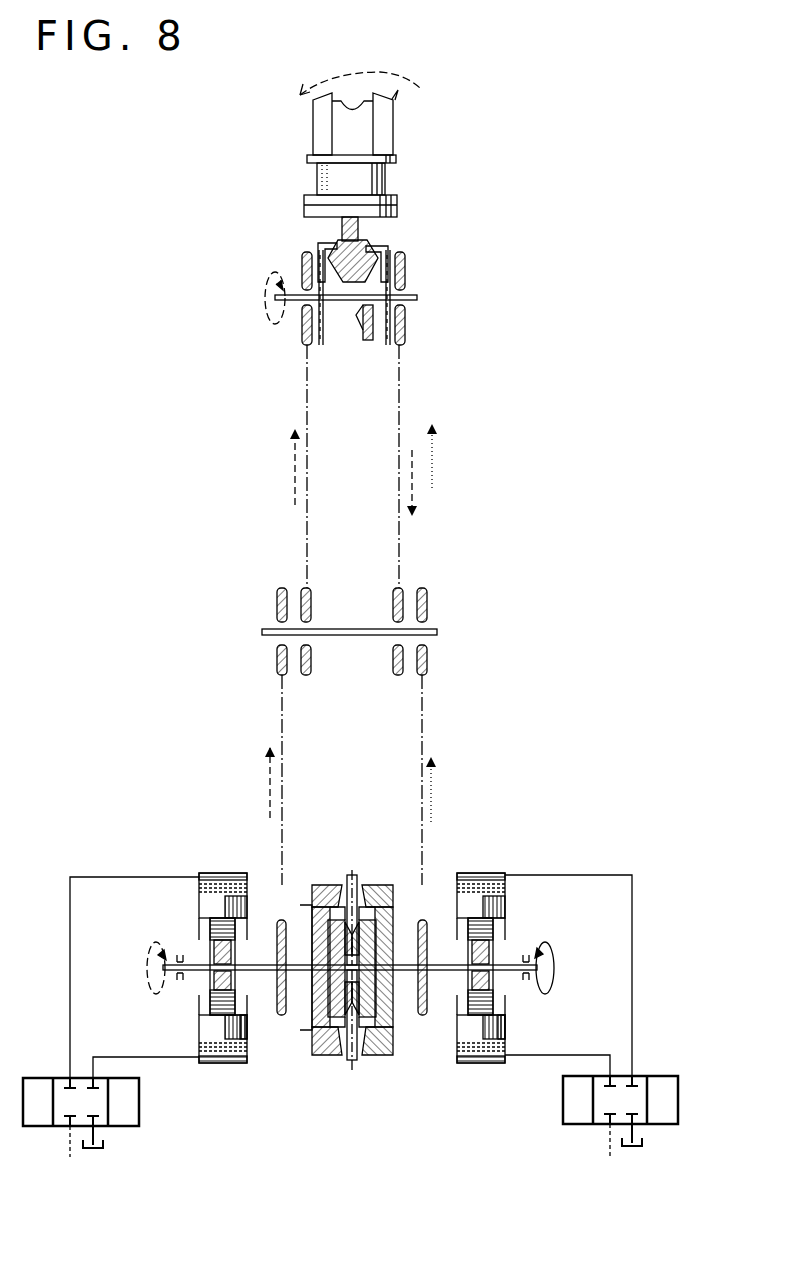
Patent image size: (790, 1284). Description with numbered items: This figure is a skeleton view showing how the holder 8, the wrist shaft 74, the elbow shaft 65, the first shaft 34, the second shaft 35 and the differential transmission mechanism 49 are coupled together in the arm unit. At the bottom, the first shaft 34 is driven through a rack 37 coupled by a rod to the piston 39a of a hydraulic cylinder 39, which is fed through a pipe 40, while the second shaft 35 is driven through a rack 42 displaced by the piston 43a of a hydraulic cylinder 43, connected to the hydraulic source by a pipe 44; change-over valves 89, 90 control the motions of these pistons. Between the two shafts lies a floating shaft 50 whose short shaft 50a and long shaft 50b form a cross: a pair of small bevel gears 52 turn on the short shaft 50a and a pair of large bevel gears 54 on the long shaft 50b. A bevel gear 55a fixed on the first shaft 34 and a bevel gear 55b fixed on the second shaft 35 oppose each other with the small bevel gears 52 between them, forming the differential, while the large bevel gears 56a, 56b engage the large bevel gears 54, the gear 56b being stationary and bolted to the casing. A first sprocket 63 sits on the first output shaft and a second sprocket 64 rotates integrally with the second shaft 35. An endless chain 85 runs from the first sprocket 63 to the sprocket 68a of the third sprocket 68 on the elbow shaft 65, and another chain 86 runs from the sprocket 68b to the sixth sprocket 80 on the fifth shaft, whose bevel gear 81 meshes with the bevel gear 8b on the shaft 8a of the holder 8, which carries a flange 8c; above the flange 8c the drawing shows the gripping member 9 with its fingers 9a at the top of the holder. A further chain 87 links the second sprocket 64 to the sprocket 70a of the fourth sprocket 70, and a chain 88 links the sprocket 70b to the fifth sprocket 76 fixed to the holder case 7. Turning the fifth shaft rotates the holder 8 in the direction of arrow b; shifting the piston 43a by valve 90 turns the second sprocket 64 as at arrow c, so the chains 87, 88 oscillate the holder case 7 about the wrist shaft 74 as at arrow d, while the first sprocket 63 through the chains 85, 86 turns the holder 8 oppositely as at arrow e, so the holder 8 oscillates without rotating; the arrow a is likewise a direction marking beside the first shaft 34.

The holder case 7 is at (317, 242).
The holder 8 is at (302, 205).
The shaft of the holder 8a is at (360, 228).
The bevel gear 8b is at (303, 262).
The flange 8c is at (397, 210).
The hand body 9 is at (386, 178).
The gripper fingers 9a is at (344, 112).
The first shaft 34 is at (512, 964).
The second shaft 35 is at (192, 965).
The rack 37 is at (500, 1002).
The hydraulic cylinder 39 is at (530, 853).
The piston 39a is at (505, 1030).
The pipe 40 is at (610, 1052).
The rack 42 is at (210, 1010).
The hydraulic cylinder 43 is at (220, 873).
The piston 43a is at (247, 1038).
The pipe 44 is at (93, 1060).
The differential transmission mechanism 49 is at (423, 1105).
The floating shaft 50 is at (437, 1035).
The short shaft 50a is at (352, 875).
The long shaft 50b is at (352, 1062).
The small bevel gears 52 is at (366, 925).
The large bevel gears 54 is at (330, 885).
The bevel gear 55a is at (393, 910).
The bevel gear 55b is at (312, 905).
The large bevel gear 56a is at (376, 1020).
The large bevel gear 56b is at (328, 1020).
The first sprocket 63 is at (424, 930).
The second sprocket 64 is at (279, 932).
The elbow shaft 65 is at (262, 632).
The third sprocket 68 is at (470, 610).
The sprocket 68a is at (428, 660).
The sprocket 68b is at (394, 606).
The fourth sprocket 70 is at (275, 618).
The sprocket 70a is at (277, 662).
The sprocket 70b is at (311, 598).
The wrist shaft 74 is at (414, 295).
The fifth sprocket 76 is at (302, 330).
The sixth sprocket 80 is at (406, 328).
The bevel gear 81 is at (366, 340).
The endless chain 85 is at (423, 706).
The endless chain 86 is at (400, 532).
The endless chain 87 is at (281, 705).
The endless chain 88 is at (306, 527).
The change-over valve 89 is at (665, 1076).
The change-over valve 90 is at (32, 1078).
The rotation direction a is at (555, 950).
The arrow b is at (398, 93).
The arrow c is at (147, 955).
The arrow d is at (263, 316).
The arrow e is at (300, 78).